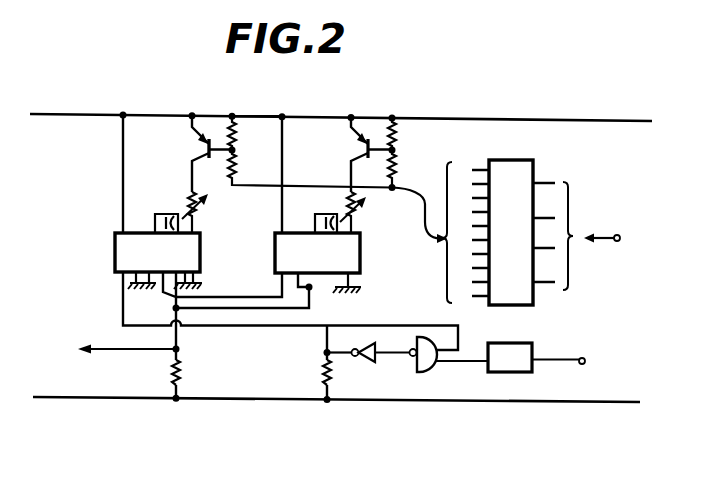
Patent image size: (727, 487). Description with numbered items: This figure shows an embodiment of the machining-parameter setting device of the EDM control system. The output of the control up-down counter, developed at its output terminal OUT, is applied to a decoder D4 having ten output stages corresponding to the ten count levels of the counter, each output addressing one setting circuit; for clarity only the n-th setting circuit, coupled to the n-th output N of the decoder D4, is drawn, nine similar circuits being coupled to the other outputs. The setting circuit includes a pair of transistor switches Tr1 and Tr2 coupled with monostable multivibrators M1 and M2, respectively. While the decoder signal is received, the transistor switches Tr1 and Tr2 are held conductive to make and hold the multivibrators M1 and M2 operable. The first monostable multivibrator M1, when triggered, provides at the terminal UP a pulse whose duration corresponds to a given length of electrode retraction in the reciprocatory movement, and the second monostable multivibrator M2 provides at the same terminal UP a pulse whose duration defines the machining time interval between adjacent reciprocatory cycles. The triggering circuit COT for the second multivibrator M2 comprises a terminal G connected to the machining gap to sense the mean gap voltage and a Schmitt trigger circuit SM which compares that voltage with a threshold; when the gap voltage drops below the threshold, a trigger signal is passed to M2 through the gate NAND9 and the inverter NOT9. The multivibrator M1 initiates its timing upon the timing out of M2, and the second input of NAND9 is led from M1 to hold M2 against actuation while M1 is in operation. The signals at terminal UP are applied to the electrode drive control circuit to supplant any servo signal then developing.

The transistor switch Tr1 is at (189, 174).
The transistor switch Tr2 is at (347, 175).
The n-th output of the decoder N is at (263, 116).
The first monostable multivibrator M1 is at (136, 251).
The second monostable multivibrator M2 is at (299, 253).
The decoder D4 is at (482, 222).
The NOT gate NOT9 is at (366, 362).
The NAND gate NAND9 is at (449, 367).
The Schmitt trigger circuit SM is at (510, 370).
The triggering circuit COT is at (487, 395).
The terminal UP is at (105, 348).
The output terminal OUT is at (611, 226).
The terminal G is at (560, 349).